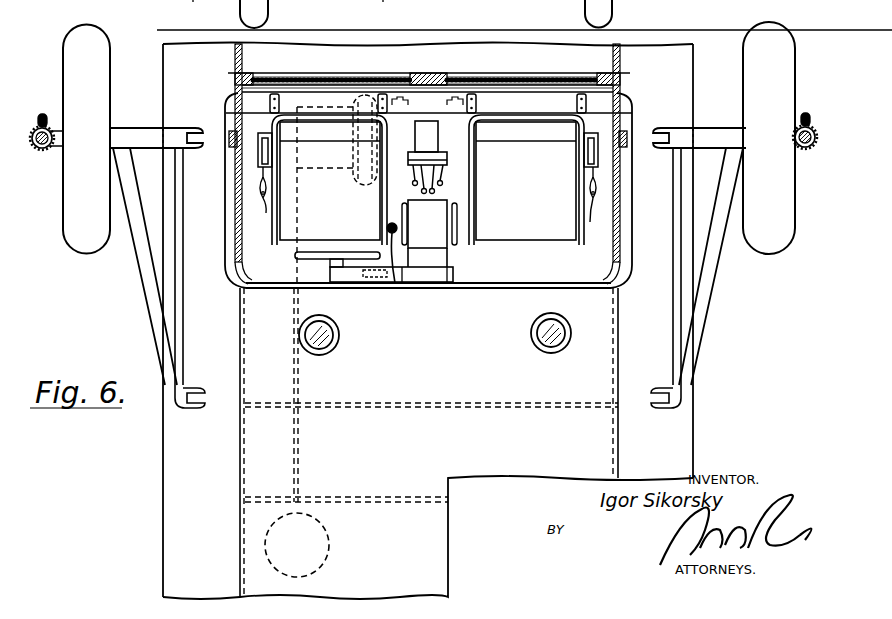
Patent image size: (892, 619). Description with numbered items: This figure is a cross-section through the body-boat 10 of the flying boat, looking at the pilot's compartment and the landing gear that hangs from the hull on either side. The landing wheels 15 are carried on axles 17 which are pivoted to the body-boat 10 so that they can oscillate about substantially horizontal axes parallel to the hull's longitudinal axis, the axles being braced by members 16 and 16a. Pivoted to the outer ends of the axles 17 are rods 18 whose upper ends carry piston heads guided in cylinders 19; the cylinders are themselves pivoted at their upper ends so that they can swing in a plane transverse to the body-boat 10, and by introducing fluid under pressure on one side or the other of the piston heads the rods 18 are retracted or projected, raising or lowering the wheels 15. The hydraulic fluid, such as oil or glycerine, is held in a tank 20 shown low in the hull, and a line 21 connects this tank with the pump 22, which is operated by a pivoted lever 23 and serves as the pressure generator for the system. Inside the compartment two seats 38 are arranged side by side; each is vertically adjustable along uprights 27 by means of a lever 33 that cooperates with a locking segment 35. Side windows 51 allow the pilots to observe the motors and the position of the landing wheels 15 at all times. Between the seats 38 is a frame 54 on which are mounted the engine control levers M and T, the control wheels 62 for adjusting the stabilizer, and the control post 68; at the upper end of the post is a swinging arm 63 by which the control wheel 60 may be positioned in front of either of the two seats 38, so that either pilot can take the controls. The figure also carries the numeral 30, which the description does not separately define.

The body-boat 10 is at (175, 550).
The landing wheels 15 is at (106, 44).
The bracing member 16 is at (146, 270).
The bracing member 16a is at (190, 218).
The axles 17 is at (52, 152).
The rods 18 is at (42, 150).
The cylinders 19 is at (47, 126).
The tank 20 is at (331, 548).
The line 21 is at (297, 449).
The pump 22 is at (355, 178).
The pivoted lever 23 is at (395, 288).
The uprights 27 is at (270, 119).
The top rail 30 is at (515, 97).
The levers 33 is at (266, 213).
The locking segments 35 is at (257, 152).
The seats 38 is at (287, 233).
The side windows 51 is at (236, 183).
The frame 54 is at (427, 233).
The wheel 60 is at (303, 260).
The control wheels 62 is at (407, 213).
The swinging arm 63 is at (343, 270).
The control post 68 is at (454, 276).
The engine control lever M is at (412, 182).
The engine control lever T is at (418, 188).